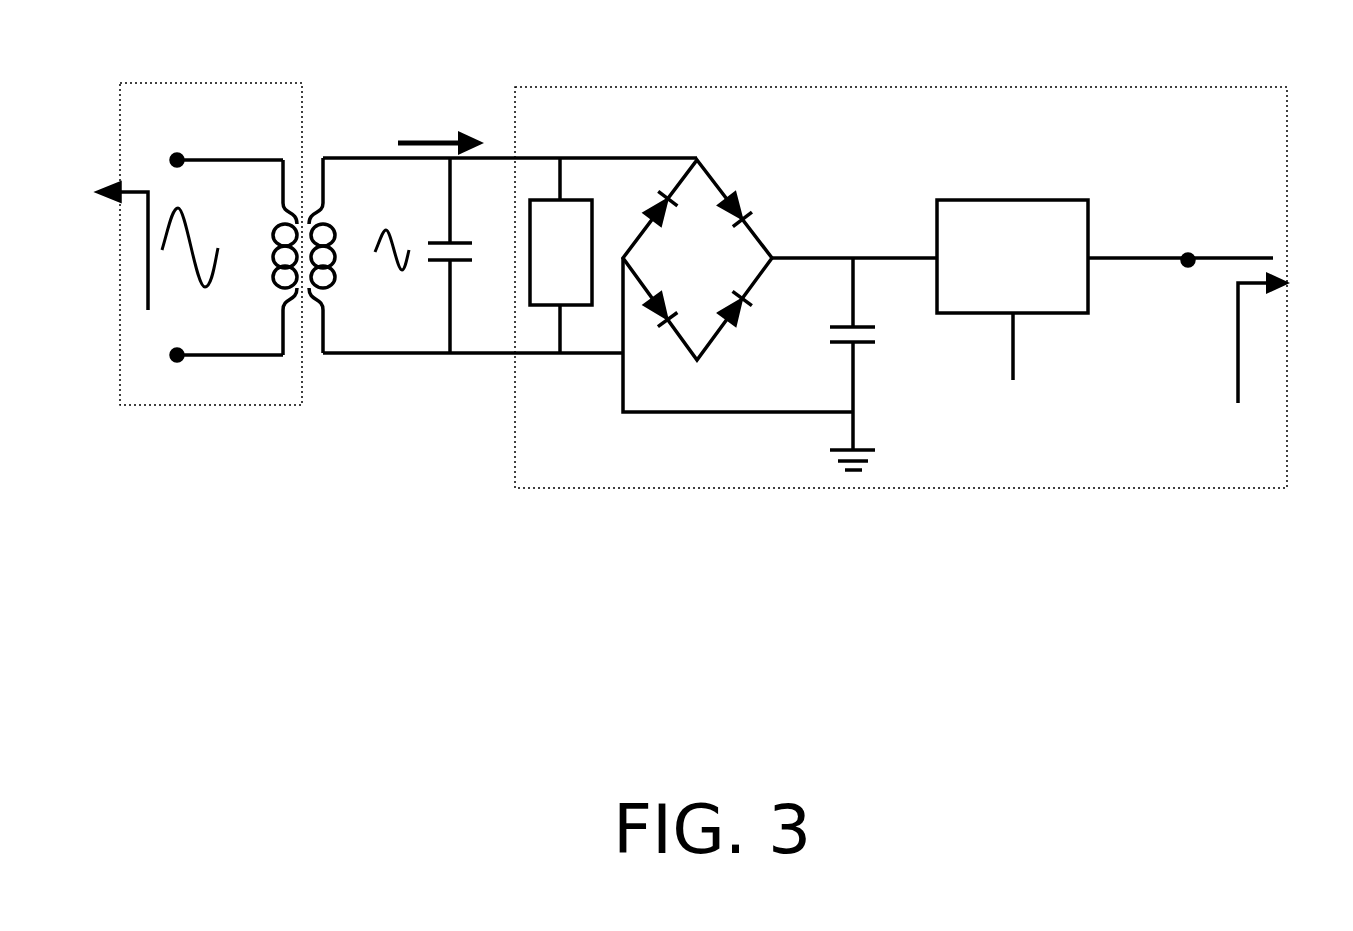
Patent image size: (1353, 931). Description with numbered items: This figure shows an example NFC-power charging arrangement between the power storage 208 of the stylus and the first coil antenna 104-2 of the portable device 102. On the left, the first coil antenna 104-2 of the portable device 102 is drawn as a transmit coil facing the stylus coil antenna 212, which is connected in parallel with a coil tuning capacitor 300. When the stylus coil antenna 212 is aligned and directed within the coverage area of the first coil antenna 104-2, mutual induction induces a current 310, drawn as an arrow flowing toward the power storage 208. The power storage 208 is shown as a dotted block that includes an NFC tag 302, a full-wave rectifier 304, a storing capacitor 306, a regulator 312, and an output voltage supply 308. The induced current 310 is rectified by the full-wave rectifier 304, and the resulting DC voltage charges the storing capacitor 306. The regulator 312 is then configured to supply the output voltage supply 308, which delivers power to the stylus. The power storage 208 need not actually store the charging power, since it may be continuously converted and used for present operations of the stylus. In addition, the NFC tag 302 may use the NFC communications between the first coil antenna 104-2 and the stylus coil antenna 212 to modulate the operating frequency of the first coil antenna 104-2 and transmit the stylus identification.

The portable device 102 is at (210, 82).
The first coil antenna 104-2 is at (263, 227).
The power storage 208 is at (566, 86).
The stylus coil antenna 212 is at (326, 224).
The coil tuning capacitor 300 is at (436, 264).
The NFC tag 302 is at (578, 197).
The full-wave rectifier 304 is at (752, 222).
The storing capacitor 306 is at (861, 352).
The output voltage supply 308 is at (1215, 247).
The induced current 310 is at (436, 137).
The regulator 312 is at (1036, 199).